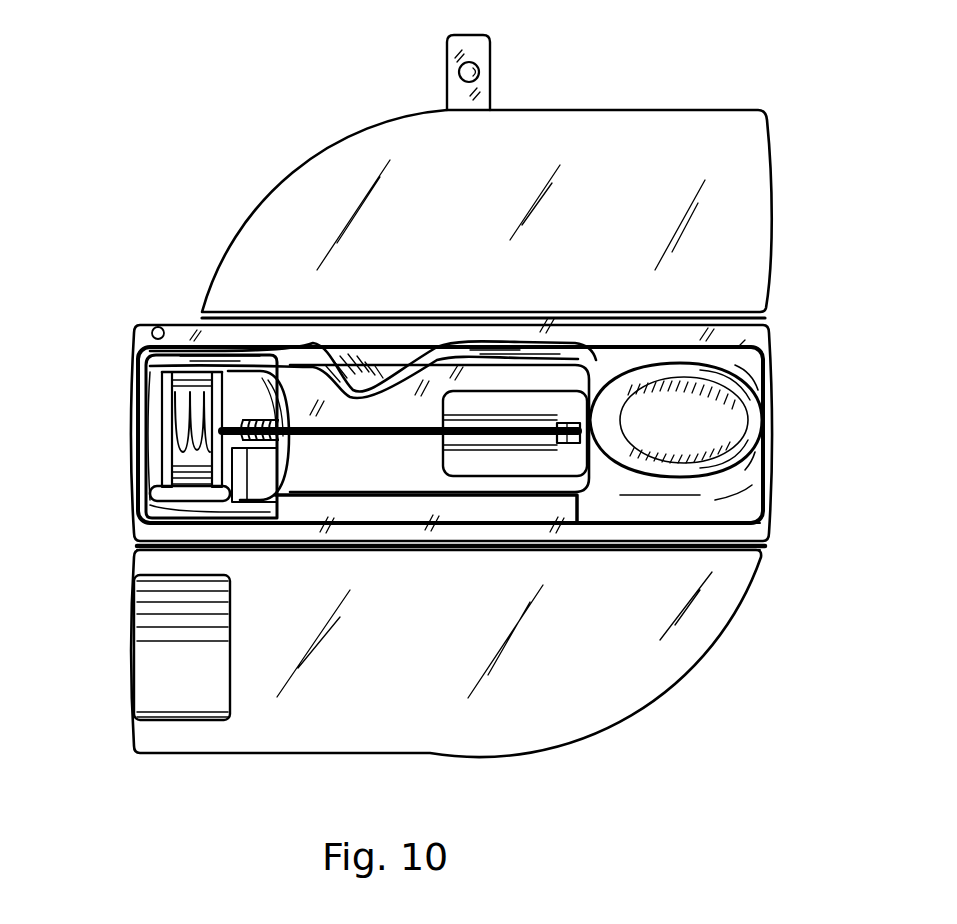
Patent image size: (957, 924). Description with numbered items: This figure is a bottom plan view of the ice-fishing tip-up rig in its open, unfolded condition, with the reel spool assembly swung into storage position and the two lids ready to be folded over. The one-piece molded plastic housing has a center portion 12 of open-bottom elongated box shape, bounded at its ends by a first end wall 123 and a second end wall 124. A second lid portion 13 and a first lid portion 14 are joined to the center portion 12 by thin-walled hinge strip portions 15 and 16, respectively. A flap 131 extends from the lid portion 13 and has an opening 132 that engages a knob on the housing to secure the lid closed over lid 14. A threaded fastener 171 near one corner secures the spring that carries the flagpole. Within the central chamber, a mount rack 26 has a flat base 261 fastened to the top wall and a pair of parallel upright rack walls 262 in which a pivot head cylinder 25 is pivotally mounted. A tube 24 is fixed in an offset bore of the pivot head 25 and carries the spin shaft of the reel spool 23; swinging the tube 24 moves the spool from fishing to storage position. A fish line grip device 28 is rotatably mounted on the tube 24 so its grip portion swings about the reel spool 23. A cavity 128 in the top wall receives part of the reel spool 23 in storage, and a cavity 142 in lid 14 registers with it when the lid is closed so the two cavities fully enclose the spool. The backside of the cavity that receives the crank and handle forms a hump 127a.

The center portion 12 is at (128, 372).
The second lid portion 13 is at (745, 140).
The first lid portion 14 is at (446, 672).
The hinge strip portion 15 is at (400, 318).
The hinge strip portion 16 is at (470, 552).
The reel spool 23 is at (224, 412).
The tube 24 is at (405, 420).
The pivot head cylinder 25 is at (592, 423).
The mount rack 26 is at (508, 390).
The fish line grip device 28 is at (284, 465).
The first end wall 123 is at (130, 493).
The second end wall 124 is at (770, 392).
The hump 127a is at (737, 438).
The cavity 128 is at (148, 425).
The flap 131 is at (478, 52).
The opening 132 is at (482, 80).
The cavity 142 is at (165, 673).
The threaded fastener 171 is at (152, 327).
The flat base 261 is at (457, 462).
The rack walls 262 is at (570, 403).